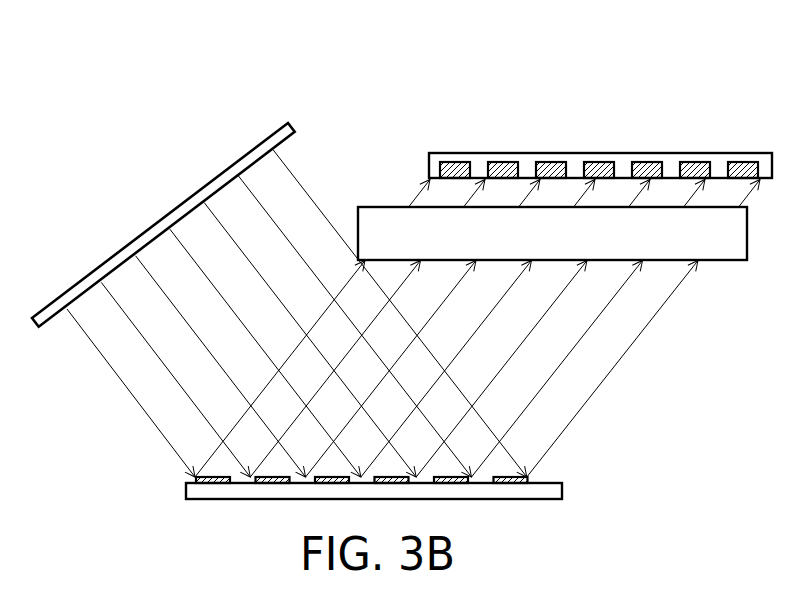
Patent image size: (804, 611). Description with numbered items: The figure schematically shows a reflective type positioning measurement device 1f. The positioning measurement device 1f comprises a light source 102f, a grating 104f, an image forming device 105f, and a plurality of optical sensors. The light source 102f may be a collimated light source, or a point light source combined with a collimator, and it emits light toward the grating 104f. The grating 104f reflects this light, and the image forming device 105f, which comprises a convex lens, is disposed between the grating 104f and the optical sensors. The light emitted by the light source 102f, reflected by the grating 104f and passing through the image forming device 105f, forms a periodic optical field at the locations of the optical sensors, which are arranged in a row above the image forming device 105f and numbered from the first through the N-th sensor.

The reflective type positioning measurement device 1f is at (770, 37).
The light source 102f is at (293, 123).
The grating 104f is at (562, 488).
The image forming device 105f is at (737, 260).